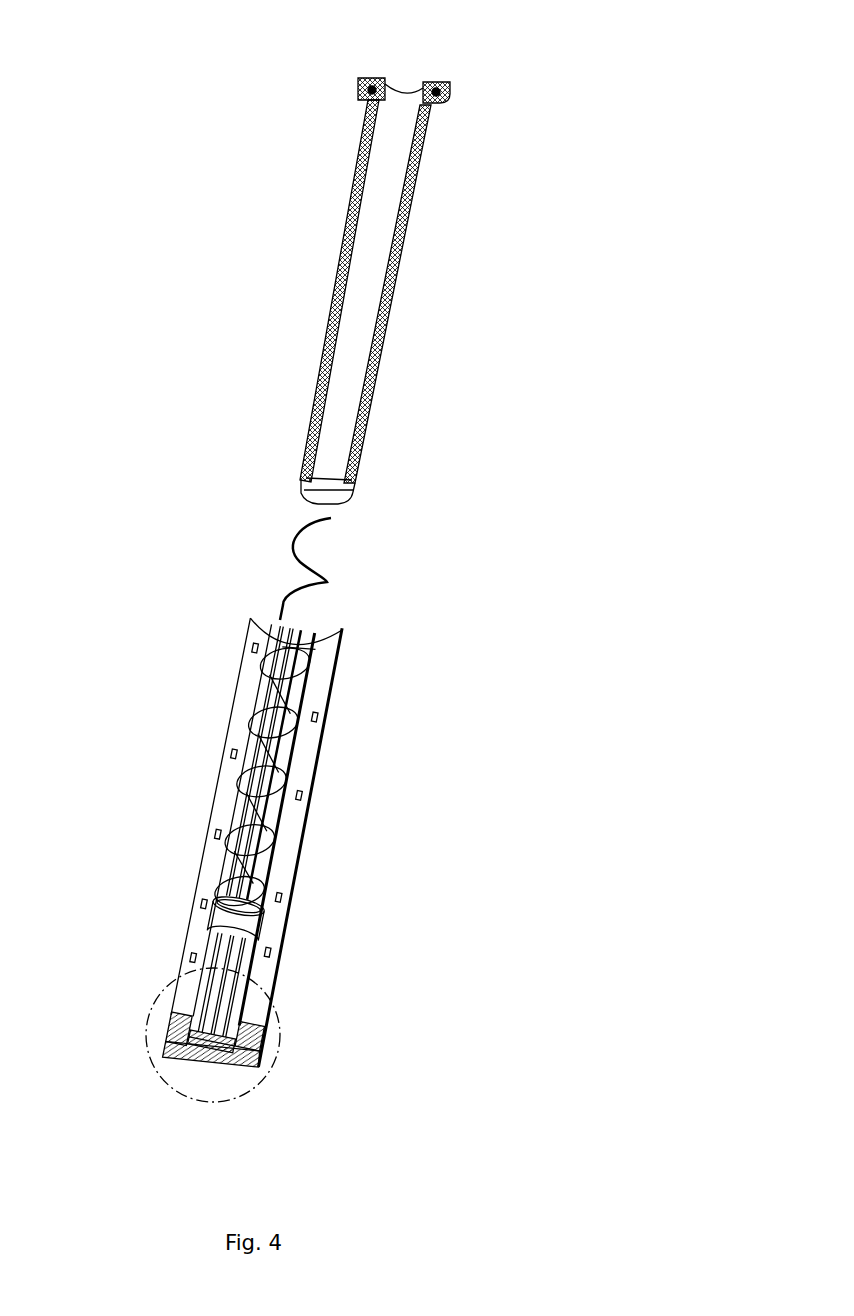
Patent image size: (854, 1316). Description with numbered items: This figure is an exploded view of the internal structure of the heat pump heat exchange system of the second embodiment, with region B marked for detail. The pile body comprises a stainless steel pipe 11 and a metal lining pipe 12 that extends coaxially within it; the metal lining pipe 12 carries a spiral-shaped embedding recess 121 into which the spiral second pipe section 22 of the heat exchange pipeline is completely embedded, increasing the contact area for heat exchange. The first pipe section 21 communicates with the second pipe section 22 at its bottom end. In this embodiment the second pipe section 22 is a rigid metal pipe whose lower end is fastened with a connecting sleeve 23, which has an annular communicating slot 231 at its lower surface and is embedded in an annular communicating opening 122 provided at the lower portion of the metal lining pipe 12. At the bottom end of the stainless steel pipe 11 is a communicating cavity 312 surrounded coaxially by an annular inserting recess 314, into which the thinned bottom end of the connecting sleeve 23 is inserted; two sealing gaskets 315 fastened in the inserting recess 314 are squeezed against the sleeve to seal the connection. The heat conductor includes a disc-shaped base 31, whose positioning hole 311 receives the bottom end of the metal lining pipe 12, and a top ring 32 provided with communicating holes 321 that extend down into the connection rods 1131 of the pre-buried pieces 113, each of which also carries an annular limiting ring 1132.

The stainless steel pipe 11 is at (197, 838).
The pre-buried piece 113 is at (195, 950).
The metal lining pipe 12 is at (386, 255).
The embedding recess 121 is at (407, 258).
The communicating opening 122 is at (358, 486).
The connection rod 1131 is at (366, 93).
The limiting ring 1132 is at (365, 101).
The first pipe section 21 is at (290, 735).
The second pipe section 22 is at (327, 583).
The connecting sleeve 23 is at (245, 913).
The communicating slot 231 is at (252, 940).
The base 31 is at (201, 1048).
The positioning hole 311 is at (195, 1033).
The communicating cavity 312 is at (210, 1053).
The inserting recess 314 is at (257, 1063).
The sealing gasket 315 is at (262, 1030).
The top ring 32 is at (452, 100).
The communicating hole 321 is at (433, 86).
The detail region B is at (188, 1087).